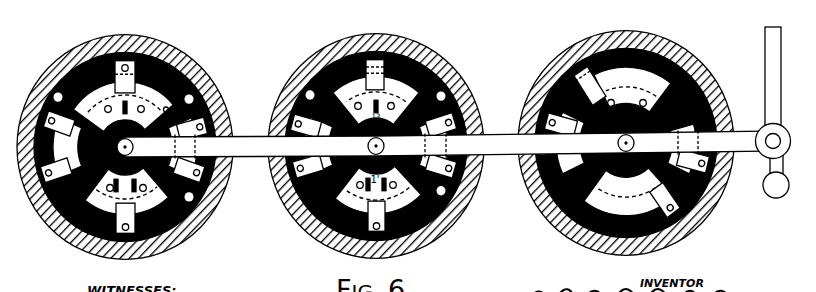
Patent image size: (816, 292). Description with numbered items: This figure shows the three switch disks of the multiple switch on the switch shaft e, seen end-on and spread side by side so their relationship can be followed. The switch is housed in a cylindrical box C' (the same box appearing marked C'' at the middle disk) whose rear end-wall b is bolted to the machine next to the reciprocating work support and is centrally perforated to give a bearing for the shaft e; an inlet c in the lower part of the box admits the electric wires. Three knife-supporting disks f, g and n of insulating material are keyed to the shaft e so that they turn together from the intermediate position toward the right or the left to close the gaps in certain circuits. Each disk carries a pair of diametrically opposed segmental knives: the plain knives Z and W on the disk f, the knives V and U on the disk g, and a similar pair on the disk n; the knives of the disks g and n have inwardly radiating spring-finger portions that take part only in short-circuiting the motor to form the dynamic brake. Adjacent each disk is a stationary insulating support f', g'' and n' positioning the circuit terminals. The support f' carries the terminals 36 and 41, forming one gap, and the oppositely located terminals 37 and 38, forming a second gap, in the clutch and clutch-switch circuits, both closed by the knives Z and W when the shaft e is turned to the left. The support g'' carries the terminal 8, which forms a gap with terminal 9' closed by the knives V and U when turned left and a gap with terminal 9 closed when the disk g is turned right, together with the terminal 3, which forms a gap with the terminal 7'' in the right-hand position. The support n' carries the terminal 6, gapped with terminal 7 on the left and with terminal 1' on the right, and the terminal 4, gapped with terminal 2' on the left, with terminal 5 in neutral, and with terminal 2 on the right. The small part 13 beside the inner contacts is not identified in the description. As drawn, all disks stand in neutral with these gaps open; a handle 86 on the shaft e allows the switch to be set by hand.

The cylindrical box C' is at (376, 142).
The casing C'' is at (376, 142).
The stationary insulating support n' is at (125, 130).
The stationary insulating support g'' is at (376, 132).
The stationary insulating support f' is at (626, 133).
The inlet c is at (123, 106).
The knife-supporting disk n is at (77, 109).
The rear end-wall b is at (163, 111).
The tooth 13 is at (125, 111).
The terminal 5 is at (125, 182).
The terminal 6 is at (125, 77).
The terminal 4 is at (125, 218).
The terminal 7 is at (59, 123).
The terminal 2 is at (56, 170).
The terminal 1' is at (191, 128).
The terminal 2' is at (189, 169).
The knife V is at (376, 100).
The knife U is at (378, 189).
The knife-supporting disk g is at (326, 106).
The terminal 3 is at (375, 75).
The terminal 8 is at (376, 216).
The terminal 9 is at (307, 166).
The terminal 7'' is at (440, 125).
The terminal 9' is at (440, 166).
The knife Z is at (632, 89).
The knife W is at (629, 192).
The knife-supporting disk f is at (578, 103).
The terminal 36 is at (590, 86).
The terminal 41 is at (560, 125).
The terminal 38 is at (692, 161).
The terminal 37 is at (665, 200).
The shaft e is at (445, 145).
The handle 86 is at (766, 20).